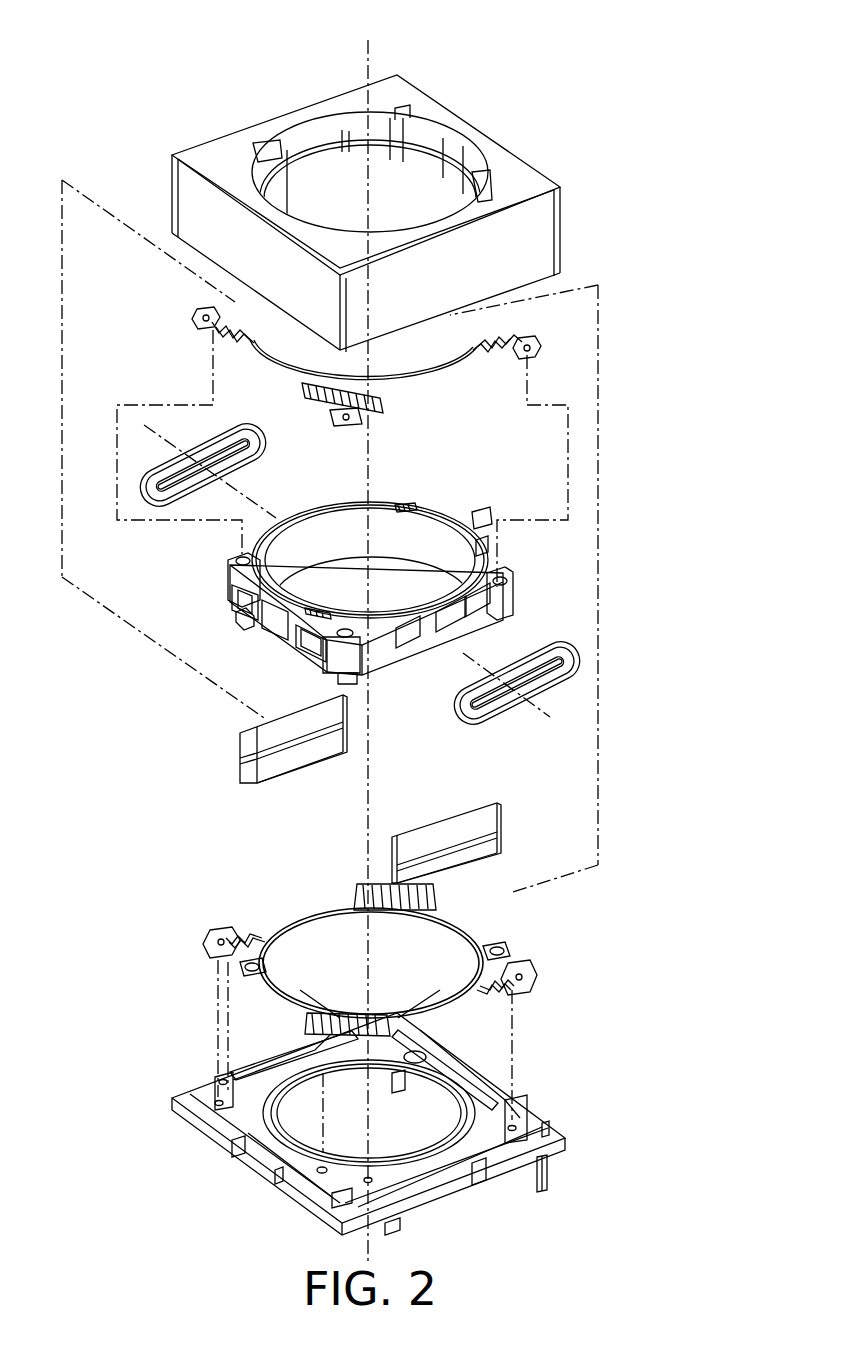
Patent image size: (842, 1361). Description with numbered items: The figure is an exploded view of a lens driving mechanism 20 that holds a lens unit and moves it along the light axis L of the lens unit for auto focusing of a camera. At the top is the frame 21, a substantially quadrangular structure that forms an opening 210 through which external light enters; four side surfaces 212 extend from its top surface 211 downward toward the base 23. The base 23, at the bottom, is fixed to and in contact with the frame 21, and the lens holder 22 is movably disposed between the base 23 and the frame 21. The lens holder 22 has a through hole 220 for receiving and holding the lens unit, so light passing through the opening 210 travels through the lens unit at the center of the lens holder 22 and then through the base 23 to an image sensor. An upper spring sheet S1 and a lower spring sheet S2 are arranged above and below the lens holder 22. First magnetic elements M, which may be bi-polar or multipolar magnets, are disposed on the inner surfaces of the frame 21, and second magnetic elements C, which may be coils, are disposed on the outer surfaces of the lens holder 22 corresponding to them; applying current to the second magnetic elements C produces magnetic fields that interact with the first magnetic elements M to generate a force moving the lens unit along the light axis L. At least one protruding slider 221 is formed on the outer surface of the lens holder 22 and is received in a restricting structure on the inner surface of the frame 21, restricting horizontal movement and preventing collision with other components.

The lens driving mechanism 20 is at (94, 63).
The frame 21 is at (566, 250).
The opening 210 is at (410, 193).
The top surface 211 is at (525, 187).
The side surfaces 212 is at (283, 113).
The lens holder 22 is at (407, 505).
The through hole 220 is at (400, 585).
The protruding slider 221 is at (267, 613).
The base 23 is at (573, 1138).
The upper spring sheet S1 is at (197, 312).
The lower spring sheet S2 is at (540, 967).
The second magnetic element C is at (257, 450).
The first magnetic element M is at (270, 770).
The light axis L is at (363, 47).